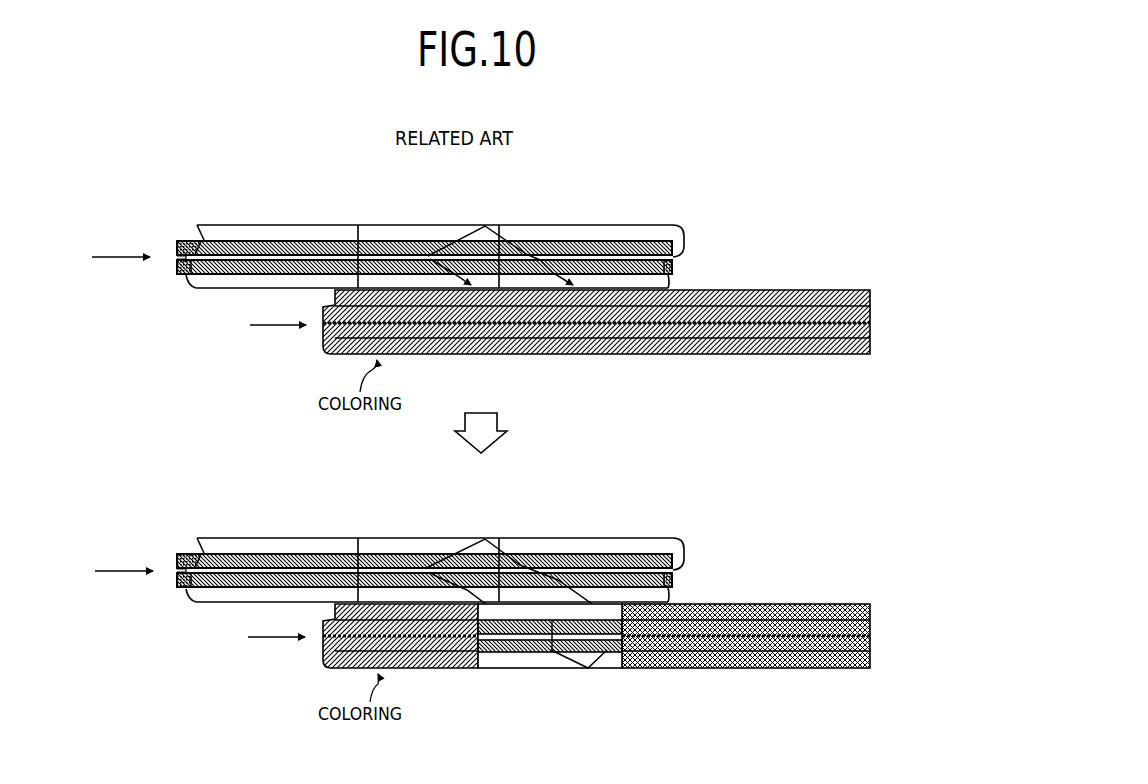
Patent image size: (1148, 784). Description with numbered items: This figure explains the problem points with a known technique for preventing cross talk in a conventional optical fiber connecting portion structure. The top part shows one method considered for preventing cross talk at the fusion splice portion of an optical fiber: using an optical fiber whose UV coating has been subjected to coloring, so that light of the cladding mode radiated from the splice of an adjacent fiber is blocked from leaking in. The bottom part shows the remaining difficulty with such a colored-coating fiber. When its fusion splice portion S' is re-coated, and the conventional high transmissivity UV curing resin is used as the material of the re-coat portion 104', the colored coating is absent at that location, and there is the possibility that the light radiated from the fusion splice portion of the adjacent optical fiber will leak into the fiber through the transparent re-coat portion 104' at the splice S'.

The re-coat portion 104' is at (547, 670).
The fusion splice portion S' is at (583, 693).